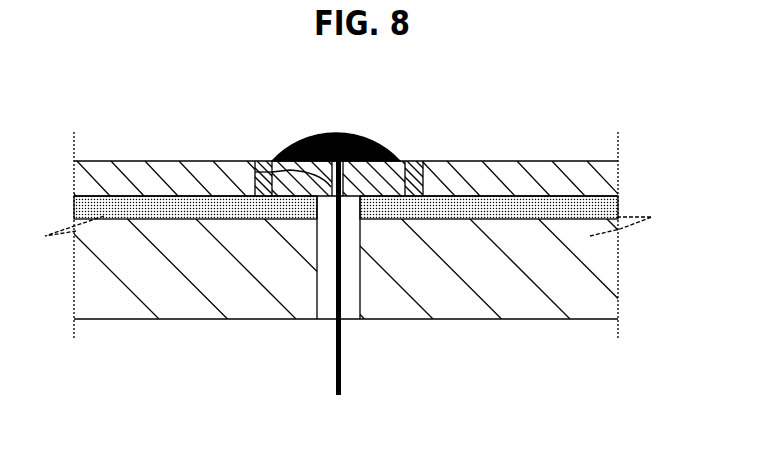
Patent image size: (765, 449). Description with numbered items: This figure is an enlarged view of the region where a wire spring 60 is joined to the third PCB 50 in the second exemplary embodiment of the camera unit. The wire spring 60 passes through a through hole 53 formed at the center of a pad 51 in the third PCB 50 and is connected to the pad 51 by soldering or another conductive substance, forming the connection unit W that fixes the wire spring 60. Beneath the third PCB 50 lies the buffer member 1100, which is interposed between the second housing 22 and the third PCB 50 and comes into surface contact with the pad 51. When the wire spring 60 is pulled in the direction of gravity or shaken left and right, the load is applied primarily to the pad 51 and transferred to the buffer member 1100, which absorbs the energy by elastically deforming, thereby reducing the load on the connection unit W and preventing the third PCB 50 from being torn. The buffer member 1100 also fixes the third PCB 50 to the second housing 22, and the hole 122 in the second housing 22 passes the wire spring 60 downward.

The third PCB 50 is at (527, 161).
The pad 51 is at (386, 142).
The through hole 53 is at (253, 172).
The connection unit W is at (295, 144).
The buffer member 1100 is at (616, 200).
The second housing 22 is at (608, 270).
The through hole 122 is at (362, 300).
The wire spring 60 is at (341, 389).